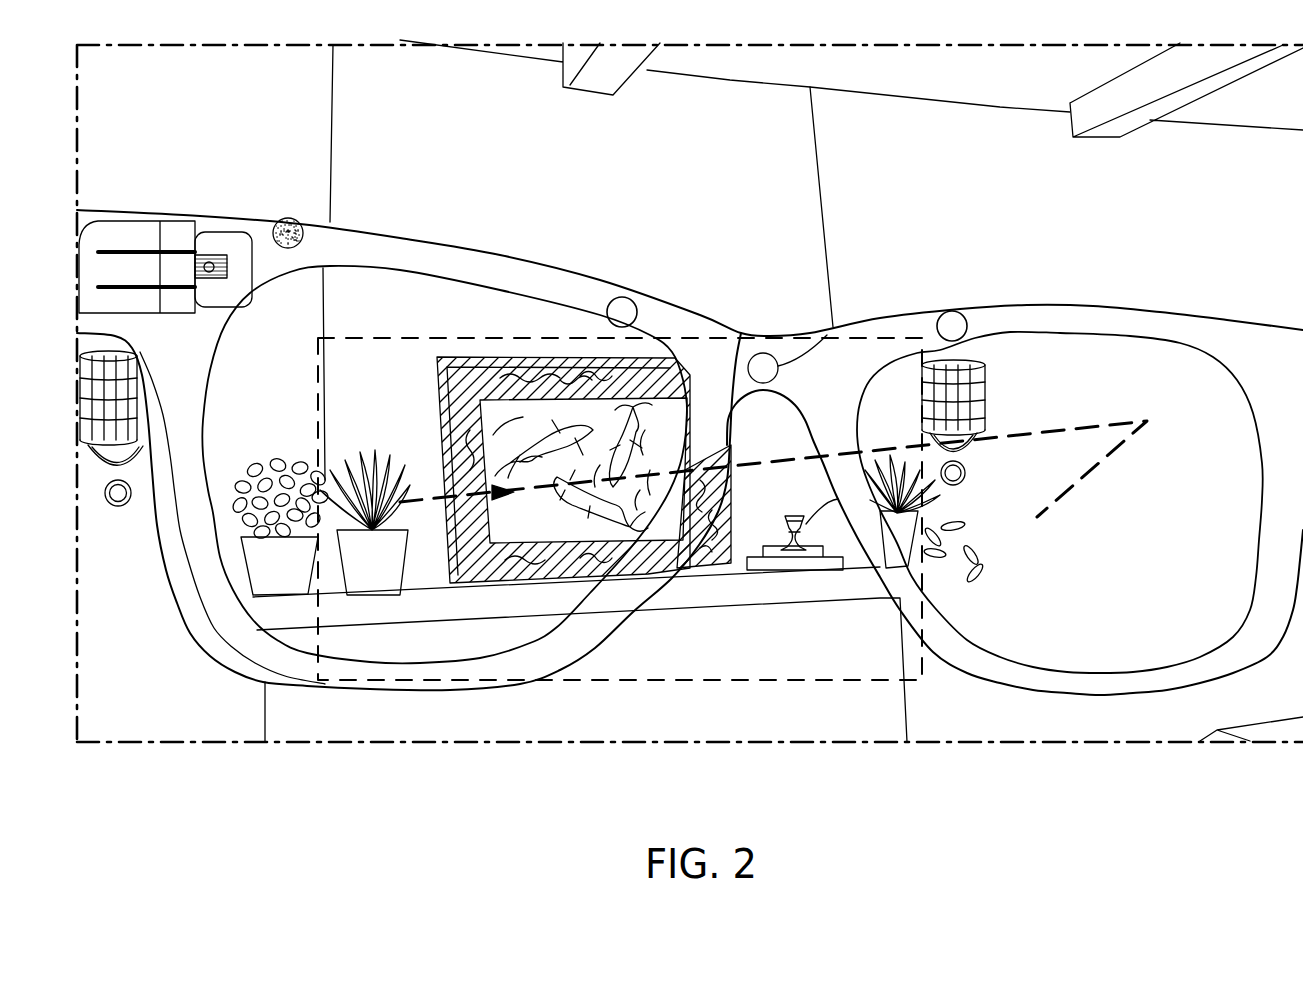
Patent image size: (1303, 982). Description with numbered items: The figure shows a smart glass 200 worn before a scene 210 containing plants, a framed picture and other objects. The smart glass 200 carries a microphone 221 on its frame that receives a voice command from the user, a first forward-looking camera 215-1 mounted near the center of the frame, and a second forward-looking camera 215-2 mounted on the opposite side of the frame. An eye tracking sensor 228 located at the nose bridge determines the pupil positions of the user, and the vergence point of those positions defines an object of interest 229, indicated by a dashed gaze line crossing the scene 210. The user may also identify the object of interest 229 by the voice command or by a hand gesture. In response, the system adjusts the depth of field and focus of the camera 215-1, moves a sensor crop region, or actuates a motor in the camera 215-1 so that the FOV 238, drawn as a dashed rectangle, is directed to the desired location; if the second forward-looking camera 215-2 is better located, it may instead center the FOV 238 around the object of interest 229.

The smart glass 200 is at (1270, 312).
The scene 210 is at (690, 192).
The camera 215-1 is at (632, 297).
The second forward-looking camera 215-2 is at (958, 311).
The microphone 221 is at (284, 219).
The eye tracking sensor 228 is at (823, 408).
The object of interest 229 is at (1111, 461).
The FOV 238 is at (412, 402).